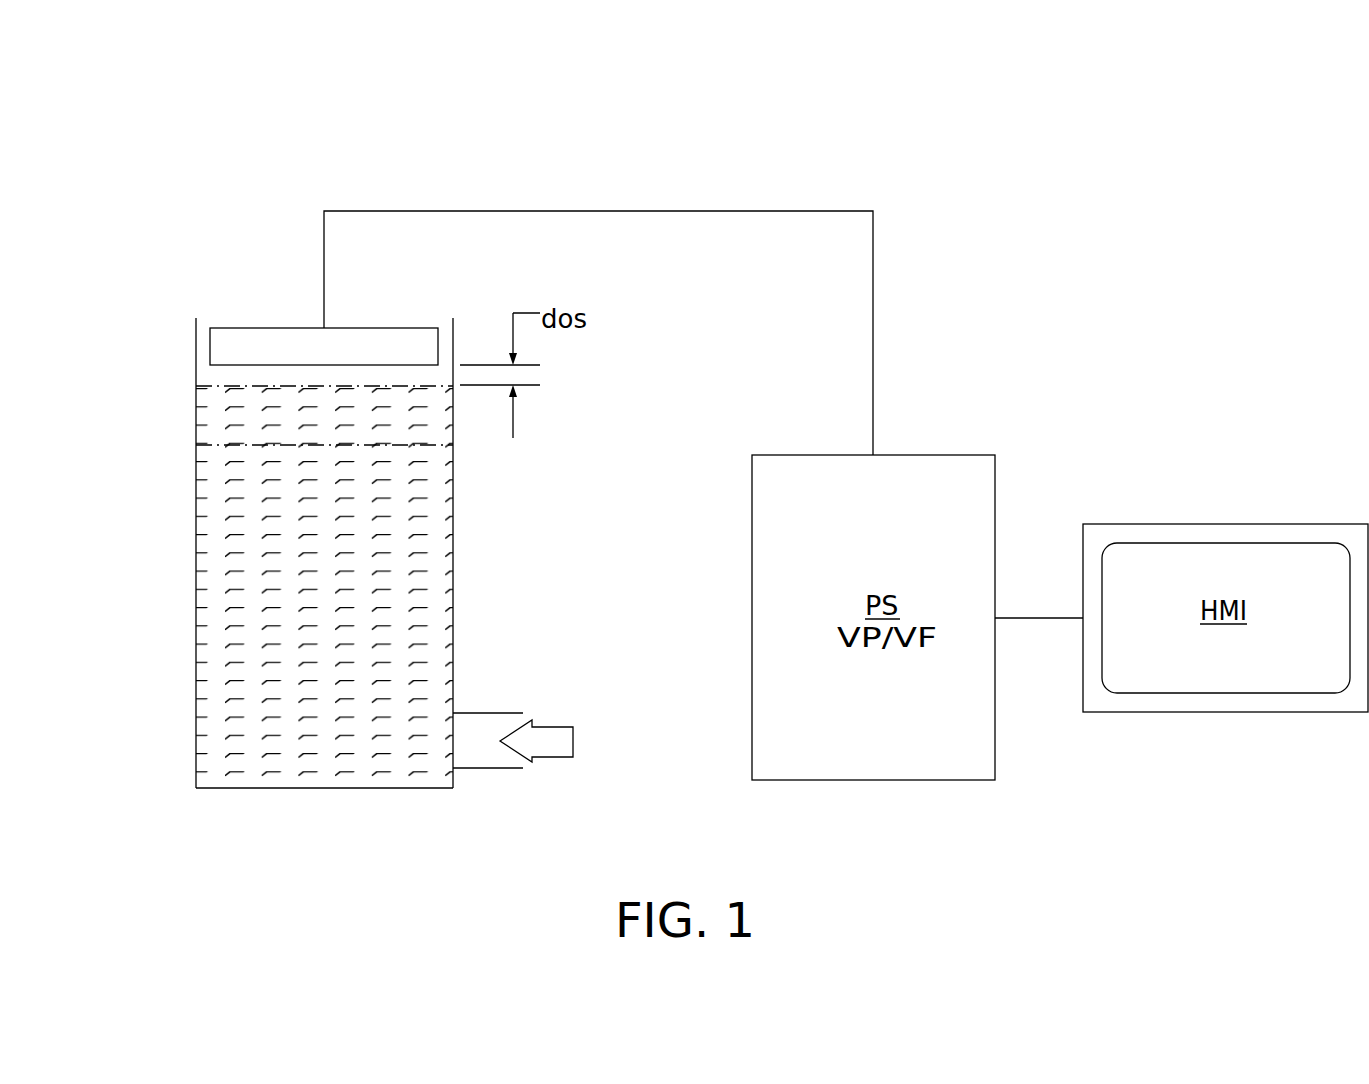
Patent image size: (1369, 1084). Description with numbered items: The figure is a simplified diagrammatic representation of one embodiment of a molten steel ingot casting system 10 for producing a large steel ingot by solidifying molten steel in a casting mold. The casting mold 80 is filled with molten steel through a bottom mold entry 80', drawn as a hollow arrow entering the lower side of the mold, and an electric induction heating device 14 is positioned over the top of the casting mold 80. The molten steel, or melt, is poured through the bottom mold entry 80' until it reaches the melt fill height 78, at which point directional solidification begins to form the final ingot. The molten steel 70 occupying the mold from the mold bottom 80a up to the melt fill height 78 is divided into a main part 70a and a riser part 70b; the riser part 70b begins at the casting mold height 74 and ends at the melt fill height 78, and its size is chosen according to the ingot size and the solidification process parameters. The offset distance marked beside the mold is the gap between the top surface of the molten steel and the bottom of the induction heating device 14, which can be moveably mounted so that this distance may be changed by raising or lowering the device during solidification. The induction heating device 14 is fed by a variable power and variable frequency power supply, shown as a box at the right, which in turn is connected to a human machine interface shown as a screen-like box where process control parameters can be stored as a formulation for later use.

The system 10 is at (843, 126).
The electric induction heating device 14 is at (340, 358).
The molten steel 70 is at (97, 386).
The main part 70a is at (324, 616).
The riser part 70b is at (324, 416).
The casting mold height 74 is at (186, 445).
The melt fill height 78 is at (186, 386).
The casting mold 80 is at (374, 553).
The mold bottom 80a is at (186, 788).
The bottom mold entry 80' is at (535, 740).